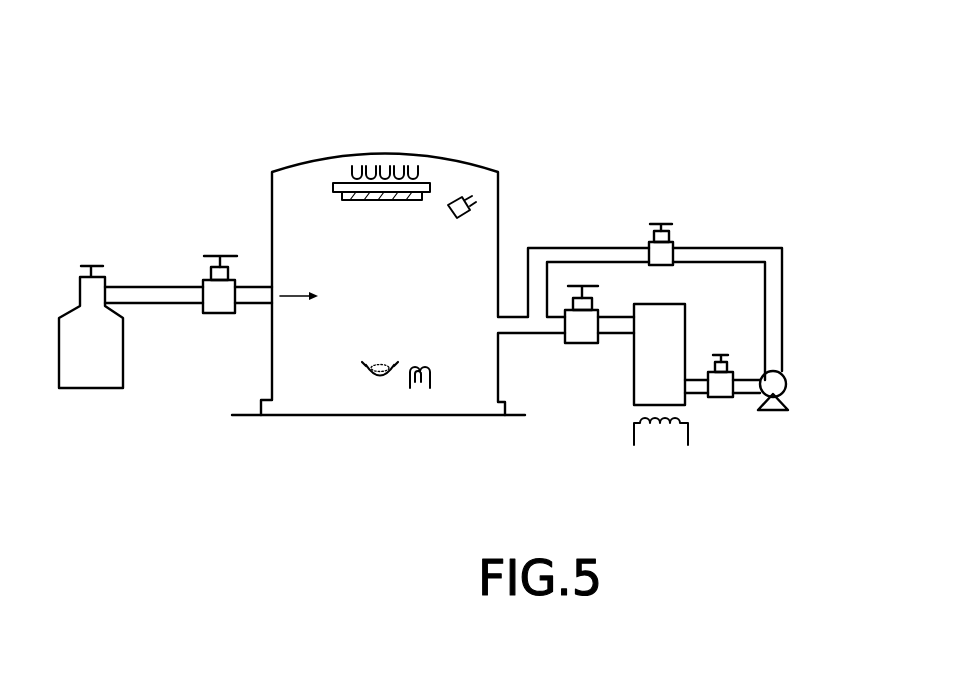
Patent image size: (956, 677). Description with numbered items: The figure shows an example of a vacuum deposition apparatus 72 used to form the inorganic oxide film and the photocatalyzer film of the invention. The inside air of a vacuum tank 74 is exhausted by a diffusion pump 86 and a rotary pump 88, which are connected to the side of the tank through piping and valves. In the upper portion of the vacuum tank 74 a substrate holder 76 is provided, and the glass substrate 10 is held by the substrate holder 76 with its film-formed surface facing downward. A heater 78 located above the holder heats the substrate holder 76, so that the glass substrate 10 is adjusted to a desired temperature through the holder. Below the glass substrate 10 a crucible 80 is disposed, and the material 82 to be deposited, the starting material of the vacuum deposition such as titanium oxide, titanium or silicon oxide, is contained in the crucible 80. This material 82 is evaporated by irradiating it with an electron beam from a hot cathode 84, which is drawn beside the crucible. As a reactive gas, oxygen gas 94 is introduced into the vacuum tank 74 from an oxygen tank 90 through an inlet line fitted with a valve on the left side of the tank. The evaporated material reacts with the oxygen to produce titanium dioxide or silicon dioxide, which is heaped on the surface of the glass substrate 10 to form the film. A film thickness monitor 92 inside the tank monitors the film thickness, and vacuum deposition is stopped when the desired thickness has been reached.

The glass substrate 10 is at (363, 201).
The vacuum deposition apparatus 72 is at (546, 140).
The vacuum tank 74 is at (457, 149).
The substrate holder 76 is at (335, 182).
The heater 78 is at (368, 165).
The crucible 80 is at (379, 378).
The material to be deposited 82 is at (377, 363).
The hot cathode 84 is at (432, 386).
The diffusion pump 86 is at (677, 395).
The rotary pump 88 is at (787, 390).
The oxygen tank 90 is at (93, 377).
The film thickness monitor 92 is at (468, 217).
The oxygen gas 94 is at (290, 295).